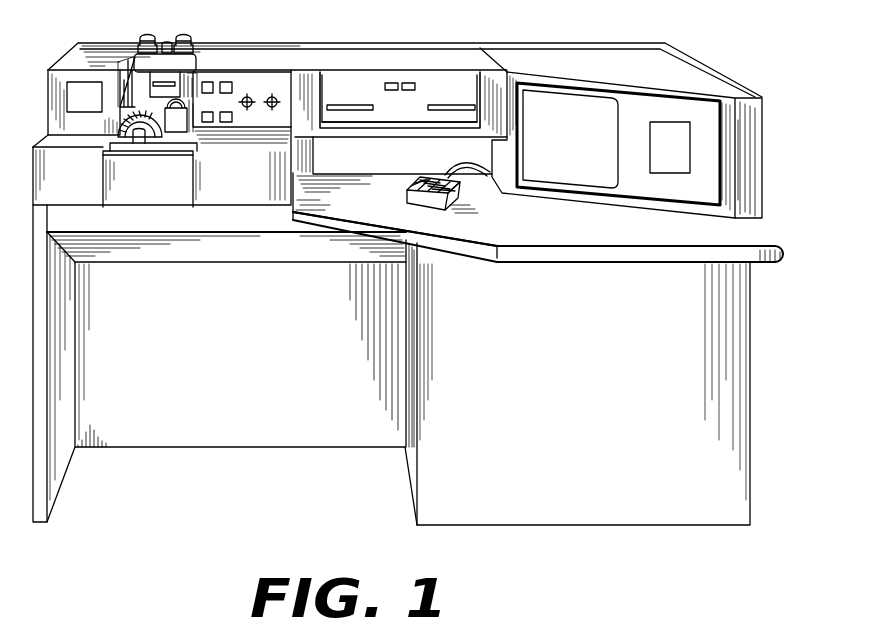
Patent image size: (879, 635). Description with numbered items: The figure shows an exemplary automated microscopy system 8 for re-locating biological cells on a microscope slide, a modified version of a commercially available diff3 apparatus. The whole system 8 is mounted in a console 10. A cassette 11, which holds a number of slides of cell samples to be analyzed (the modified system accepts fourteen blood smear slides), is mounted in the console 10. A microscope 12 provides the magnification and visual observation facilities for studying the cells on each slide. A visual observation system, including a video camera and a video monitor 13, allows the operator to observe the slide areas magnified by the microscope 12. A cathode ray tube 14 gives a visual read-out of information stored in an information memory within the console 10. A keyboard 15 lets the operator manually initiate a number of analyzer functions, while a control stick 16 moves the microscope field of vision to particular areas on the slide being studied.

The automated microscopy system 8 is at (217, 523).
The console 10 is at (763, 184).
The cassette 11 is at (131, 76).
The microscope 12 is at (163, 43).
The video monitor 13 is at (673, 156).
The cathode ray tube 14 is at (579, 148).
The keyboard 15 is at (419, 174).
The control stick 16 is at (275, 98).